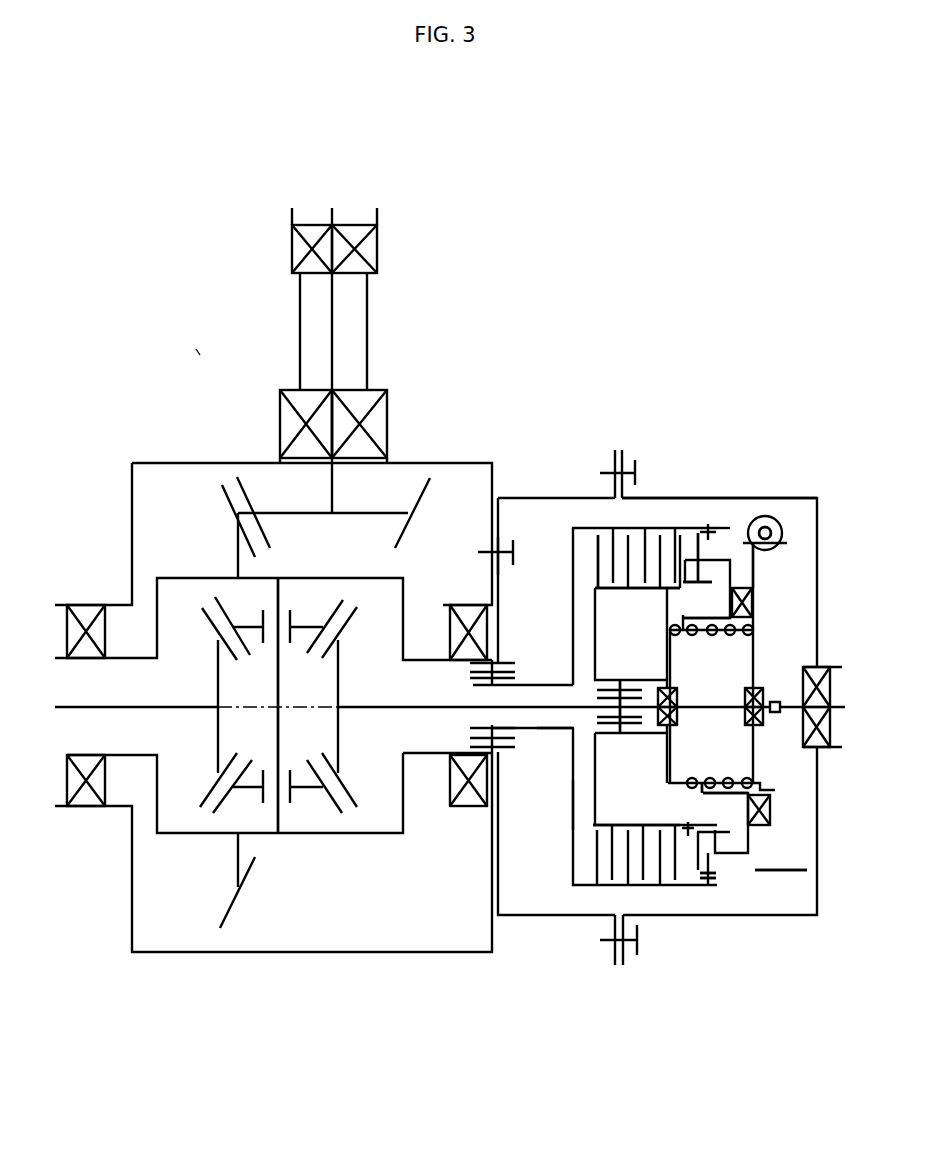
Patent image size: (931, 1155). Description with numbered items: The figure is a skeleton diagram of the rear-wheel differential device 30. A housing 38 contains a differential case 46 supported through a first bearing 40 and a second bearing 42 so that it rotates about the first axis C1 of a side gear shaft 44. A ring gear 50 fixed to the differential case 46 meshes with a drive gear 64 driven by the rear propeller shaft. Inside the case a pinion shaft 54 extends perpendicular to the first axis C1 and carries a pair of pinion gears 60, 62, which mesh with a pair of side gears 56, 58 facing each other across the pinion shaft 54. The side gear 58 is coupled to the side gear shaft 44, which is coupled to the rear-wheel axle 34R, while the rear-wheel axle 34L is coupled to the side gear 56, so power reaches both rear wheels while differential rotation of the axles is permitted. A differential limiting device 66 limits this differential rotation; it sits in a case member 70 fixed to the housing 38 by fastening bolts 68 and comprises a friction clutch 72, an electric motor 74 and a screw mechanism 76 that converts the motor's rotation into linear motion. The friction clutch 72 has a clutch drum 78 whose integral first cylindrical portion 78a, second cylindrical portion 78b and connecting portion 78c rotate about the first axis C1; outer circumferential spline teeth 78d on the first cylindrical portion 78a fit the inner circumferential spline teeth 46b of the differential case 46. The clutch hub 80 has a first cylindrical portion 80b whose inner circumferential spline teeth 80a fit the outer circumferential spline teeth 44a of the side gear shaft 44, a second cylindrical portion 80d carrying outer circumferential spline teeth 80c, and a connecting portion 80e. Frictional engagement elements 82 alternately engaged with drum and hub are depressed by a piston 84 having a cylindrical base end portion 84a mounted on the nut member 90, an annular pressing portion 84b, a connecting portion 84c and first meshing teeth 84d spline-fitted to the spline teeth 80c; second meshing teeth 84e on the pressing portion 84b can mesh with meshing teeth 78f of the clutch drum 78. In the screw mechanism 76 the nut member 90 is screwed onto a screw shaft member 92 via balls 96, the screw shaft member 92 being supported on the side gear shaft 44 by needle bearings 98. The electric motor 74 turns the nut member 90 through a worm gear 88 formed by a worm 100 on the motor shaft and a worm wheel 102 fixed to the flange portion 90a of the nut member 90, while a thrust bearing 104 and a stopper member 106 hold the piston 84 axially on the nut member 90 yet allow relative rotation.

The rear-wheel differential device 30 is at (200, 355).
The housing 38 is at (202, 462).
The first bearing 40 is at (106, 631).
The second bearing 42 is at (485, 771).
The side gear shaft 44 is at (395, 704).
The outer circumferential spline teeth 44a is at (624, 726).
The differential case 46 is at (330, 578).
The inner circumferential spline teeth 46b is at (494, 680).
The ring gear 50 is at (238, 515).
The pinion shaft 54 is at (280, 804).
The side gear 56 is at (212, 626).
The side gear 58 is at (344, 624).
The pinion gear 60 is at (232, 636).
The pinion gear 62 is at (224, 797).
The drive gear 64 is at (262, 546).
The differential limiting device 66 is at (734, 449).
The fastening bolts 68 is at (514, 552).
The case member 70 is at (561, 498).
The friction clutch 72 is at (720, 503).
The electric motor 74 is at (769, 518).
The screw mechanism 76 is at (641, 794).
The clutch drum 78 is at (558, 884).
The first cylindrical portion 78a is at (537, 728).
The second cylindrical portion 78b is at (664, 888).
The connecting portion 78c is at (556, 808).
The outer circumferential spline teeth 78d is at (470, 740).
The meshing teeth 78f is at (706, 532).
The clutch hub 80 is at (616, 625).
The inner circumferential spline teeth 80a is at (612, 690).
The first cylindrical portion 80b is at (612, 738).
The outer circumferential spline teeth 80c is at (702, 790).
The second cylindrical portion 80d is at (646, 588).
The connecting portion 80e is at (590, 571).
The frictional engagement elements 82 is at (573, 532).
The piston 84 is at (733, 886).
The cylindrical base end portion 84a is at (724, 779).
The annular pressing portion 84b is at (708, 870).
The connecting portion 84c is at (759, 839).
The first meshing teeth 84d is at (714, 582).
The second meshing teeth 84e is at (690, 562).
The worm gear 88 is at (779, 572).
The nut member 90 is at (703, 634).
The flange portion 90a is at (751, 600).
The screw shaft member 92 is at (745, 675).
The balls 96 is at (692, 778).
The needle bearings 98 is at (678, 714).
The worm 100 is at (770, 534).
The worm wheel 102 is at (786, 871).
The thrust bearing 104 is at (770, 808).
The stopper member 106 is at (688, 820).
The rear-wheel axle 34L is at (130, 710).
The rear-wheel axle 34R is at (789, 720).
The first axis C1 is at (316, 700).